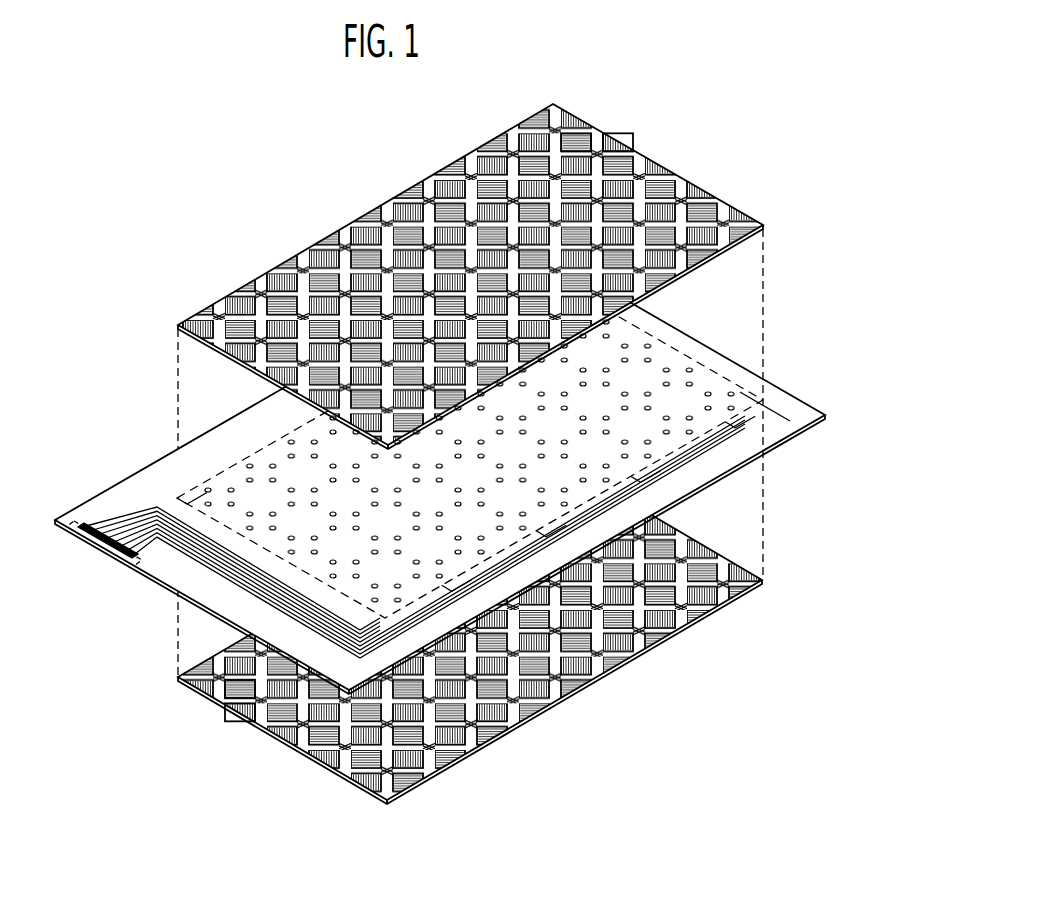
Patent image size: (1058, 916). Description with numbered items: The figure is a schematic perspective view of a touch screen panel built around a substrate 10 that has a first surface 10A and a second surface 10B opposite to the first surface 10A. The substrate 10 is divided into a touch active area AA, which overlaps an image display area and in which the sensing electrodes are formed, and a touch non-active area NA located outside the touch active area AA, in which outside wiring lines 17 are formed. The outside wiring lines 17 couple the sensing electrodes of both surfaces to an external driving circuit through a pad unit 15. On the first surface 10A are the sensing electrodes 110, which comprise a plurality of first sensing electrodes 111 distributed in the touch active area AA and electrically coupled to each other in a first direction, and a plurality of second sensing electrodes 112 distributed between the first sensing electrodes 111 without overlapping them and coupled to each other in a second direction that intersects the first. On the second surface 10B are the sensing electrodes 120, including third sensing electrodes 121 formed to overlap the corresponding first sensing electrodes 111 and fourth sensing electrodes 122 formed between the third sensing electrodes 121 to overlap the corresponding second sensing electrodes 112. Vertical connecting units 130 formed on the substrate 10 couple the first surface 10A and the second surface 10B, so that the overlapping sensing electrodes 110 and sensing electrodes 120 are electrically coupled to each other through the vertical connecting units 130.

The substrate 10 is at (469, 469).
The first surface 10A is at (788, 400).
The second surface 10B is at (785, 440).
The touch non-active area NA is at (705, 450).
The touch active area AA is at (625, 468).
The pad unit 15 is at (86, 522).
The outside wiring lines 17 is at (127, 498).
The sensing electrodes of the first surface 110 is at (470, 261).
The first sensing electrodes 111 is at (577, 140).
The second sensing electrodes 112 is at (610, 142).
The sensing electrodes of the second surface 120 is at (447, 630).
The third sensing electrodes 121 is at (238, 688).
The fourth sensing electrodes 122 is at (237, 715).
The vertical connecting units 130 is at (203, 465).